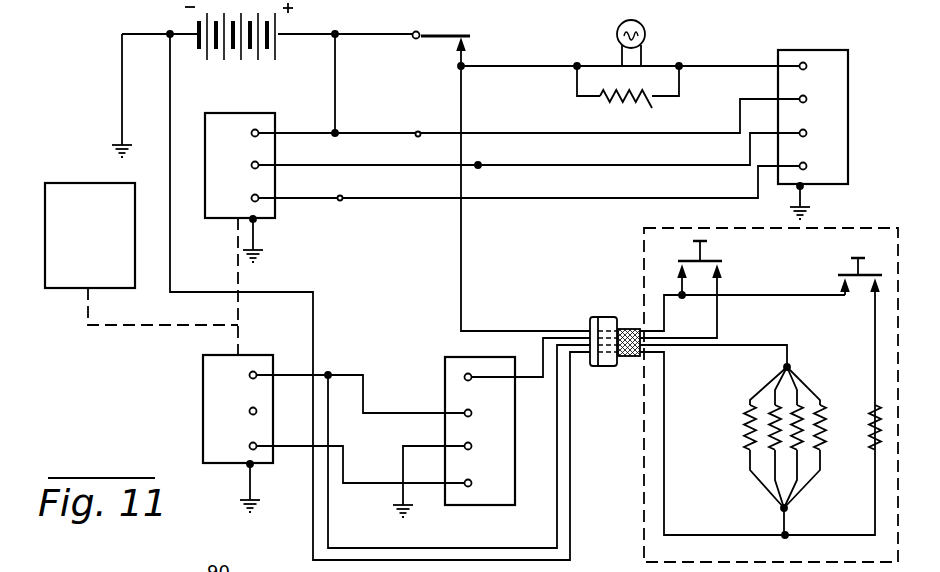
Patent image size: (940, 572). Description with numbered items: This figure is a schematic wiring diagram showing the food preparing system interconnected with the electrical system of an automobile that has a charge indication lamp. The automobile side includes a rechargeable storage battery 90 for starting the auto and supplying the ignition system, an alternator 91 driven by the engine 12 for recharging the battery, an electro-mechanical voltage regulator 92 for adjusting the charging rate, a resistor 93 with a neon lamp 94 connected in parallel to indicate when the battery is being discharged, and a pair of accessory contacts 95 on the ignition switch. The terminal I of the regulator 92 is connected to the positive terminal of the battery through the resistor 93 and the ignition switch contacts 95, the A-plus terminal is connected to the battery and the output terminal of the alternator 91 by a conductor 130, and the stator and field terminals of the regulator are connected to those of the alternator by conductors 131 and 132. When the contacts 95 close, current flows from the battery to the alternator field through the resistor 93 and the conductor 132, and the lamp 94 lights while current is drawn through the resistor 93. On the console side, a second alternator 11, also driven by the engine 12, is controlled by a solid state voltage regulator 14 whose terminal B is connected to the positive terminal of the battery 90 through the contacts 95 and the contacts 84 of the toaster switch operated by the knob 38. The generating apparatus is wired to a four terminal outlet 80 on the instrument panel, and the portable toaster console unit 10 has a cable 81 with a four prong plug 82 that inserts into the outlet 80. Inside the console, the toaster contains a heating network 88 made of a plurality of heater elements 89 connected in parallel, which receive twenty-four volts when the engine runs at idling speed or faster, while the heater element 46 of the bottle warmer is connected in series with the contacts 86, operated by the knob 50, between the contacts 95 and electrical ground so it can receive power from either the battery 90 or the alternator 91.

The portable toaster console unit 10 is at (741, 395).
The alternator 11 is at (208, 405).
The engine 12 is at (77, 190).
The solid state voltage regulator 14 is at (472, 500).
The knob 38 is at (697, 258).
The heater element 46 is at (870, 447).
The knob 50 is at (856, 262).
The four terminal outlet 80 is at (594, 319).
The cable 81 is at (625, 356).
The four prong plug 82 is at (607, 317).
The contacts 84 is at (759, 257).
The contacts 86 is at (836, 321).
The heating network 88 is at (777, 449).
The heater elements 89 is at (775, 432).
The rechargeable storage battery 90 is at (236, 52).
The alternator 91 is at (262, 119).
The electro-mechanical voltage regulator 92 is at (843, 78).
The resistor 93 is at (612, 95).
The neon lamp 94 is at (652, 34).
The accessory contacts 95 is at (450, 42).
The conductor 130 is at (417, 132).
The conductor 131 is at (478, 165).
The conductor 132 is at (342, 200).